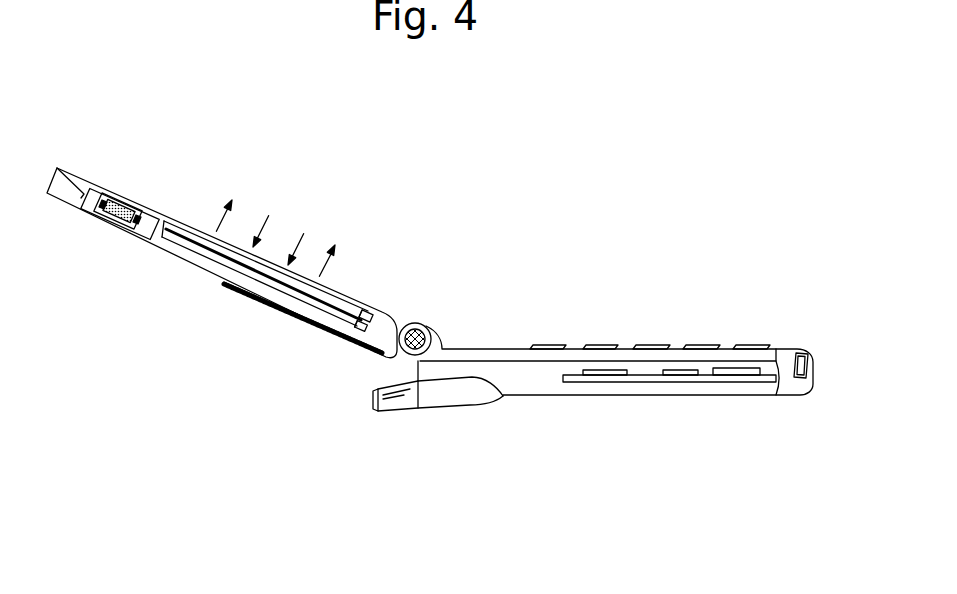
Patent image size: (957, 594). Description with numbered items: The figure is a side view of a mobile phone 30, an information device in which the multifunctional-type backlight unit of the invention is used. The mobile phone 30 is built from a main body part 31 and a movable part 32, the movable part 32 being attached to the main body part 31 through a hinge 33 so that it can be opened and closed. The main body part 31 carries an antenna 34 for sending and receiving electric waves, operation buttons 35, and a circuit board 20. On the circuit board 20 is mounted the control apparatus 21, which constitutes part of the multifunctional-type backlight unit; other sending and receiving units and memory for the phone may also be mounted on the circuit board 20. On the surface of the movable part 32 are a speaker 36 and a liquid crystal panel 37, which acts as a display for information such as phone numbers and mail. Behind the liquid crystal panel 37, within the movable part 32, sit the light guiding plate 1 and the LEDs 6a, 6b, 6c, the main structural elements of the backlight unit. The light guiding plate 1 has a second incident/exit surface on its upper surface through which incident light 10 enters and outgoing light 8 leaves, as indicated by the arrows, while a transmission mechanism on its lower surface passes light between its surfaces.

The light guiding plate 1 is at (176, 238).
The LED 6a is at (366, 314).
The LED 6b is at (361, 326).
The LED 6c is at (359, 318).
The outgoing light 8 is at (236, 216).
The incident light 10 is at (257, 235).
The circuit board 20 is at (641, 383).
The control apparatus 21 is at (788, 372).
The mobile phone 30 is at (603, 258).
The main body part 31 is at (522, 396).
The movable part 32 is at (246, 289).
The hinge 33 is at (418, 324).
The antenna 34 is at (394, 406).
The operation buttons 35 is at (647, 346).
The speaker 36 is at (120, 199).
The liquid crystal panel 37 is at (168, 221).